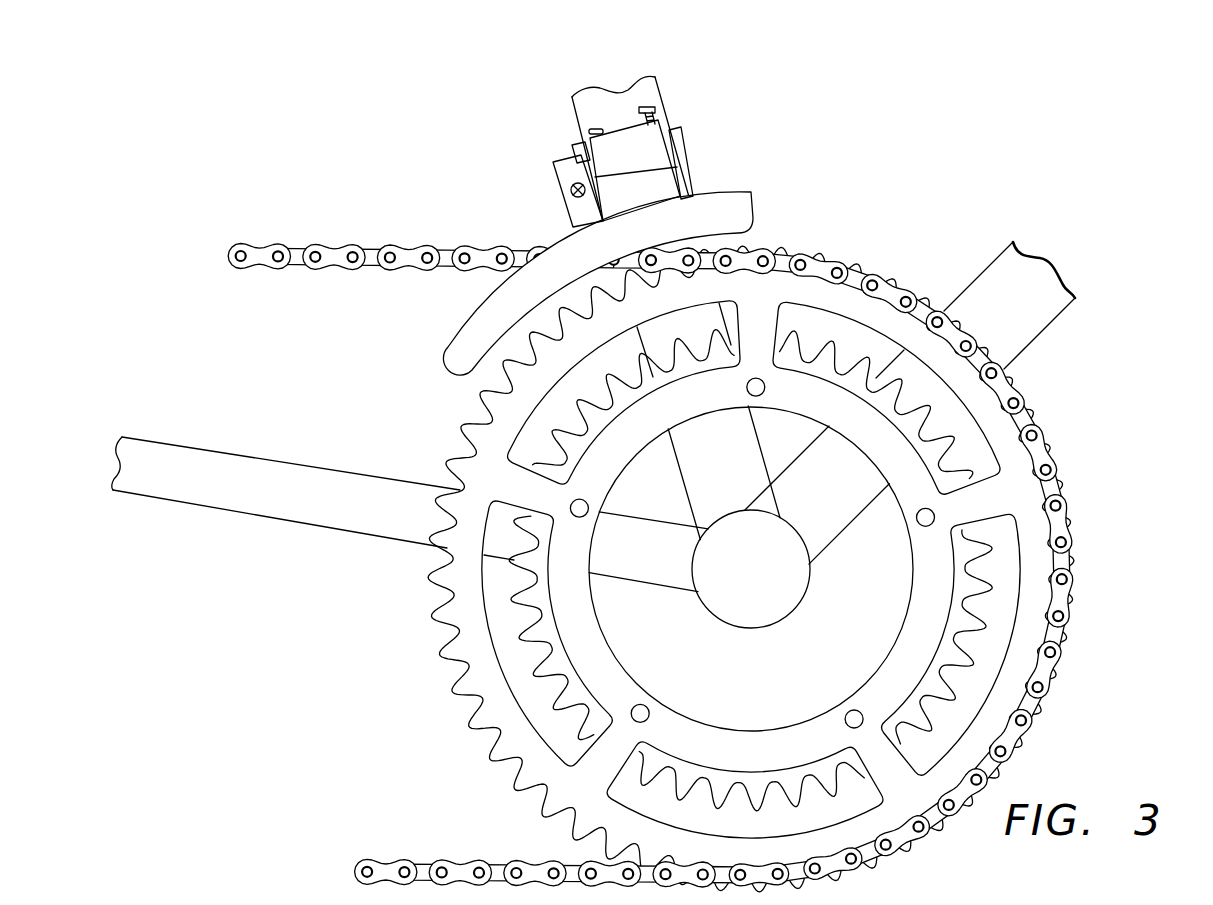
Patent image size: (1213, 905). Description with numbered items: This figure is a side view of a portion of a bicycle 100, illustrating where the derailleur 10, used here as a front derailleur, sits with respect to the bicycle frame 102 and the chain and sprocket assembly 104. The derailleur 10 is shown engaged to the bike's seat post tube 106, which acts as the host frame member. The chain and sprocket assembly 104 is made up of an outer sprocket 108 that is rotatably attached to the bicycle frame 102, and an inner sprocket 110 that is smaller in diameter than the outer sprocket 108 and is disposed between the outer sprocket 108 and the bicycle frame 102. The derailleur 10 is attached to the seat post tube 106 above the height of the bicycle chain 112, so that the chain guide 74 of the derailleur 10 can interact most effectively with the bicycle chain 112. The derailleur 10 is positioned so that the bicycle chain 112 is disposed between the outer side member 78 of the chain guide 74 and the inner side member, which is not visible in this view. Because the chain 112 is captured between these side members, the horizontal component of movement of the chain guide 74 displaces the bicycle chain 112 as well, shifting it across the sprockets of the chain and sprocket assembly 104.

The derailleur 10 is at (552, 140).
The chain guide 74 is at (735, 222).
The outer side member 78 is at (713, 213).
The bicycle 100 is at (646, 483).
The bicycle frame 102 is at (973, 278).
The chain and sprocket assembly 104 is at (431, 618).
The seat post tube 106 is at (745, 473).
The outer sprocket 108 is at (495, 707).
The inner sprocket 110 is at (533, 632).
The bicycle chain 112 is at (414, 255).